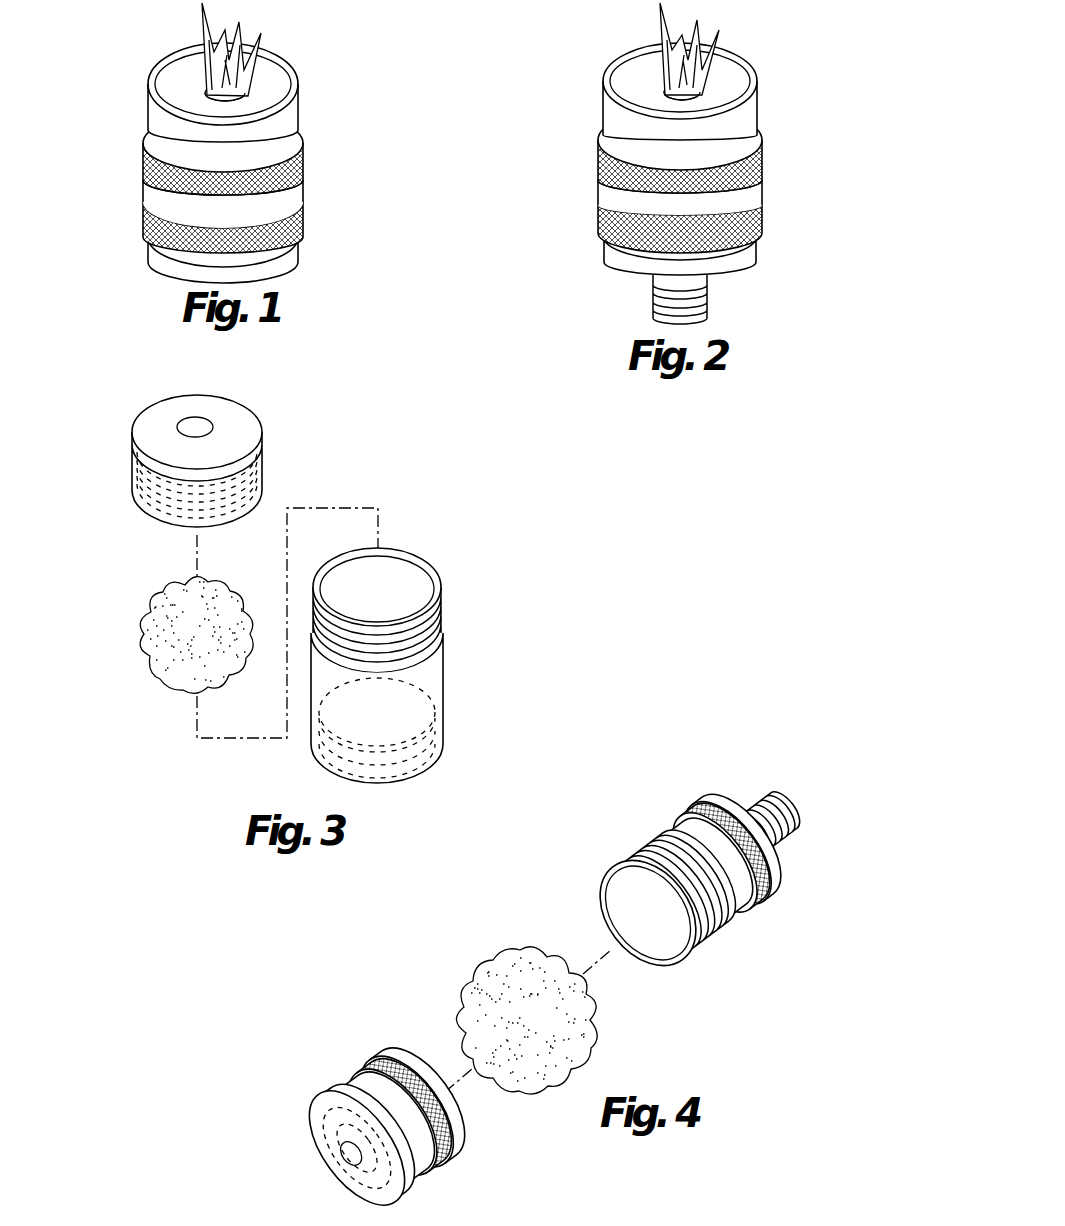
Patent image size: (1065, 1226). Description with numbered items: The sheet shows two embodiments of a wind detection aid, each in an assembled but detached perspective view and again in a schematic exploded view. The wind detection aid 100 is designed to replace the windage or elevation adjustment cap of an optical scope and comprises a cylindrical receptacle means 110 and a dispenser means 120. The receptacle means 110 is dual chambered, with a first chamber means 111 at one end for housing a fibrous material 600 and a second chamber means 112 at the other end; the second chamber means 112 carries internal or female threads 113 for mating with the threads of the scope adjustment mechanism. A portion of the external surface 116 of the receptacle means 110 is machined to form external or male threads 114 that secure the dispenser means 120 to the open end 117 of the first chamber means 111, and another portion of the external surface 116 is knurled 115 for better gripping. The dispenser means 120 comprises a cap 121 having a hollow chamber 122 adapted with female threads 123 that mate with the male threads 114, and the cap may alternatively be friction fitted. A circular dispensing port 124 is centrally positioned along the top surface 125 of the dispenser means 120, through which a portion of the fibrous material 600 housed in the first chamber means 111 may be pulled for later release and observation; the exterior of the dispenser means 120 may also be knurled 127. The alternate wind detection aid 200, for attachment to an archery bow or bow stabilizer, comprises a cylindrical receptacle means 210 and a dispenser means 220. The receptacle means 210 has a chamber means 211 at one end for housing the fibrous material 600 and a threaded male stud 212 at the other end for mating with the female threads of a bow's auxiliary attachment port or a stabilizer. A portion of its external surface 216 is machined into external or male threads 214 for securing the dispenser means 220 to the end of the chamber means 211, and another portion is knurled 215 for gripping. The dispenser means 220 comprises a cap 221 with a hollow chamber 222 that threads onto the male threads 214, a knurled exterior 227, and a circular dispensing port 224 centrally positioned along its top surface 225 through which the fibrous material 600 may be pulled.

In FIG. 1, the wind detection aid 100 is at (217, 143).
In FIG. 1, the cylindrical receptacle means 110 is at (224, 213).
In FIG. 3, the cylindrical receptacle means 110 is at (355, 641).
In FIG. 3, the first chamber means 111 is at (400, 580).
In FIG. 1, the second chamber means 112 is at (298, 248).
In FIG. 3, the second chamber means 112 is at (312, 757).
In FIG. 3, the internal or female threads 113 is at (353, 695).
In FIG. 3, the external or male threads 114 is at (440, 632).
In FIG. 1, the knurled portion 115 is at (148, 213).
In FIG. 1, the external surface 116 is at (287, 197).
In FIG. 3, the external surface 116 is at (440, 600).
In FIG. 3, the open end 117 is at (333, 565).
In FIG. 1, the dispenser means 120 is at (210, 99).
In FIG. 3, the dispenser means 120 is at (207, 484).
In FIG. 1, the cap 121 is at (152, 105).
In FIG. 3, the cap 121 is at (240, 425).
In FIG. 3, the hollow chamber 122 is at (155, 520).
In FIG. 3, the female threads 123 is at (257, 483).
In FIG. 1, the dispensing port 124 is at (207, 93).
In FIG. 3, the dispensing port 124 is at (178, 425).
In FIG. 1, the top surface 125 is at (244, 123).
In FIG. 3, the top surface 125 is at (212, 467).
In FIG. 1, the knurled portion 127 is at (148, 157).
In FIG. 1, the fibrous material 600 is at (255, 50).
In FIG. 2, the fibrous material 600 is at (667, 58).
In FIG. 3, the fibrous material 600 is at (152, 660).
In FIG. 4, the fibrous material 600 is at (500, 980).
In FIG. 2, the wind detection aid 200 is at (653, 163).
In FIG. 2, the cylindrical receptacle means 210 is at (666, 245).
In FIG. 4, the cylindrical receptacle means 210 is at (673, 864).
In FIG. 4, the chamber means 211 is at (630, 892).
In FIG. 2, the threaded male stud 212 is at (650, 293).
In FIG. 4, the threaded male stud 212 is at (752, 790).
In FIG. 4, the external or male threads 214 is at (630, 850).
In FIG. 2, the knurled portion 215 is at (608, 217).
In FIG. 4, the knurled portion 215 is at (682, 800).
In FIG. 2, the external surface 216 is at (740, 202).
In FIG. 4, the external surface 216 is at (742, 905).
In FIG. 2, the dispenser means 220 is at (649, 98).
In FIG. 4, the dispenser means 220 is at (358, 1101).
In FIG. 2, the cap 221 is at (753, 97).
In FIG. 4, the cap 221 is at (310, 1100).
In FIG. 4, the hollow chamber 222 is at (405, 1052).
In FIG. 2, the dispensing port 224 is at (700, 90).
In FIG. 4, the dispensing port 224 is at (340, 1145).
In FIG. 4, the top surface 225 is at (350, 1178).
In FIG. 2, the knurled portion 227 is at (597, 160).
In FIG. 4, the knurled portion 227 is at (355, 1063).